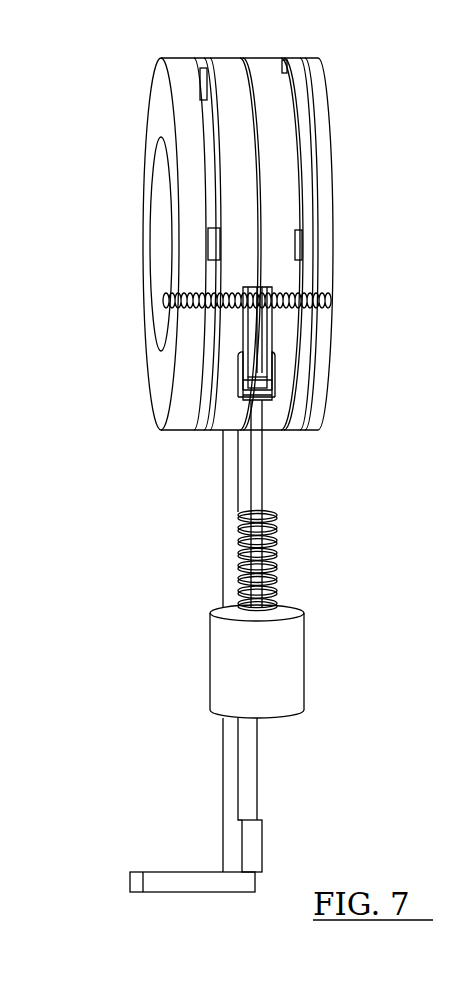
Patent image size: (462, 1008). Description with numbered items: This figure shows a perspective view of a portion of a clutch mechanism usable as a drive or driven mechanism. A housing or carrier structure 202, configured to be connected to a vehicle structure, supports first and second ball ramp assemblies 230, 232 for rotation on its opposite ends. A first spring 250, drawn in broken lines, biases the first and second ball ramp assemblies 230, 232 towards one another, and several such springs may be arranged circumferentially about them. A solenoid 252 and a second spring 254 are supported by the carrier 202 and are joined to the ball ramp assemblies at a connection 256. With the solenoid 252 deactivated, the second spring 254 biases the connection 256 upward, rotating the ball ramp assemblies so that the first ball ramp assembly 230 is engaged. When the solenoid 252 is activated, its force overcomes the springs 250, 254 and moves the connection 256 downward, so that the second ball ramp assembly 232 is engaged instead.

The carrier structure 202 is at (223, 478).
The first ball ramp assembly 230 is at (223, 80).
The second ball ramp assembly 232 is at (303, 80).
The first spring 250 is at (333, 312).
The solenoid 252 is at (303, 660).
The second spring 254 is at (278, 563).
The connection 256 is at (238, 368).